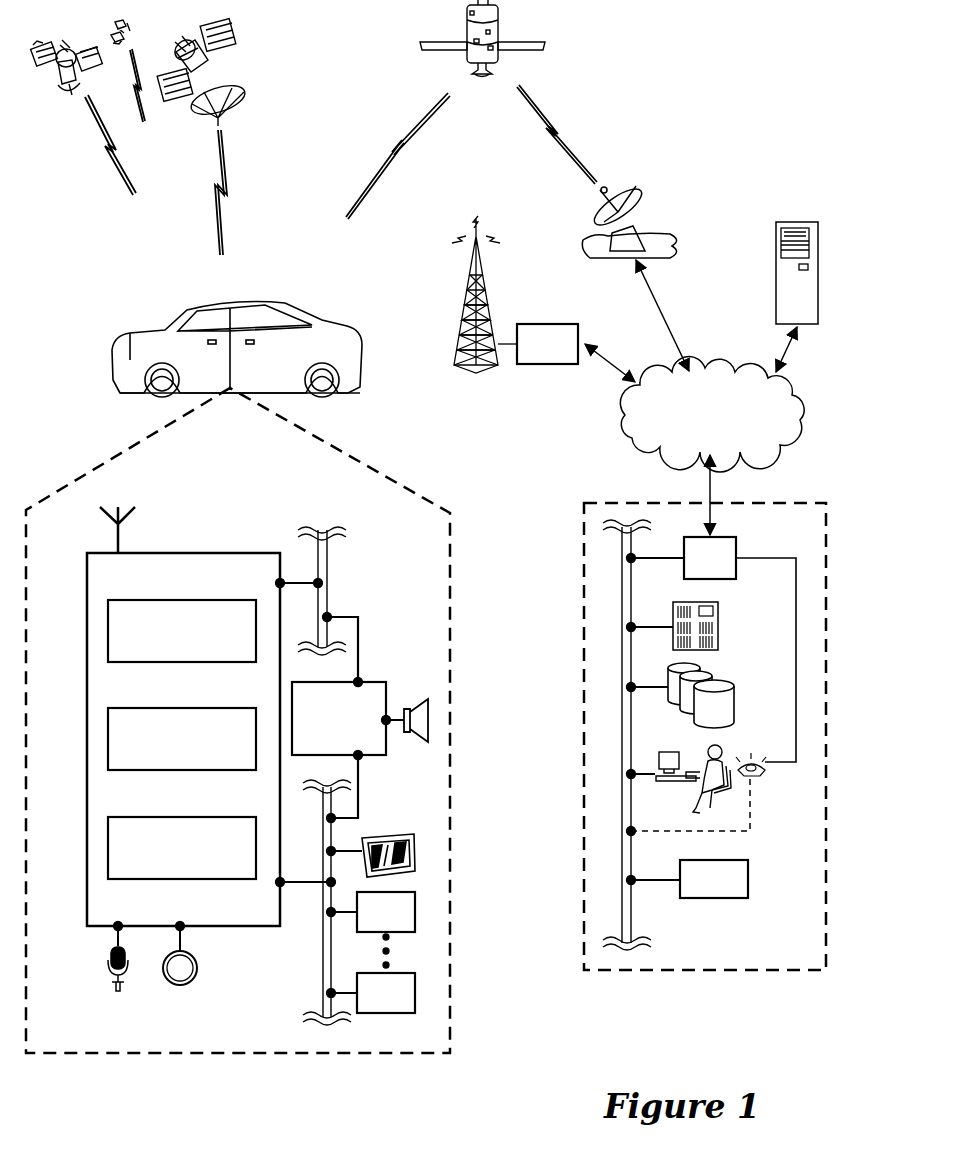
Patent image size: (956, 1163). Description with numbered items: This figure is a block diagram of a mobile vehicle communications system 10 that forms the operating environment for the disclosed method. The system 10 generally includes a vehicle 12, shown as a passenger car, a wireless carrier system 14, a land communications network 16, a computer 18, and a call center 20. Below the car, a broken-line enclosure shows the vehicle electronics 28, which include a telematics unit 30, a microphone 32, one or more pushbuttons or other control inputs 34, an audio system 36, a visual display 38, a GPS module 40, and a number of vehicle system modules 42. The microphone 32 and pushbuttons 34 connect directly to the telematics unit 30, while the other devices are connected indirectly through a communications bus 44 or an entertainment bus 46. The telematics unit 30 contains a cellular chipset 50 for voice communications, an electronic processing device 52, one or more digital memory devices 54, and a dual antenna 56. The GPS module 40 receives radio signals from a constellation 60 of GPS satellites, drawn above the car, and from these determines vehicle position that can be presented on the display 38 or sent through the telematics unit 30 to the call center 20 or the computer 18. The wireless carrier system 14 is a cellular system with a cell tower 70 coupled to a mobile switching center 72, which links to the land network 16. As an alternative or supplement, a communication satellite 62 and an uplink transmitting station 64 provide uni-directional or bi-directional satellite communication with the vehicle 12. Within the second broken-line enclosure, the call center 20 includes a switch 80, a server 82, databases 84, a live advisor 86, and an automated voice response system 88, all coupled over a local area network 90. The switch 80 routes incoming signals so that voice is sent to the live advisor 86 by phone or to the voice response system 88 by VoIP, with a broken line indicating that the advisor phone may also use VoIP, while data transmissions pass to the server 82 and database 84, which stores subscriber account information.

The mobile vehicle communications system 10 is at (738, 38).
The vehicle 12 is at (112, 363).
The wireless carrier system 14 is at (464, 385).
The land communications network 16 is at (712, 414).
The computer 18 is at (819, 288).
The call center 20 is at (690, 971).
The vehicle electronics 28 is at (228, 1055).
The telematics unit 30 is at (237, 552).
The microphone 32 is at (110, 962).
The pushbuttons or other control inputs 34 is at (198, 966).
The audio system 36 is at (360, 748).
The visual display 38 is at (385, 833).
The GPS module 40 is at (386, 912).
The vehicle system modules 42 is at (386, 993).
The communications bus 44 is at (322, 958).
The entertainment bus 46 is at (328, 556).
The cellular chipset 50 is at (182, 631).
The electronic processing device 52 is at (182, 739).
The digital memory devices 54 is at (182, 848).
The dual antenna 56 is at (117, 540).
The constellation of GPS satellites 60 is at (283, 93).
The communication satellite 62 is at (498, 16).
The uplink transmitting station 64 is at (655, 232).
The cell tower 70 is at (487, 290).
The mobile switching center 72 is at (547, 344).
The switch 80 is at (740, 649).
The server 82 is at (720, 621).
The database 84 is at (737, 694).
The live advisor 86 is at (691, 796).
The automated voice response system 88 is at (714, 879).
The local area network 90 is at (632, 917).